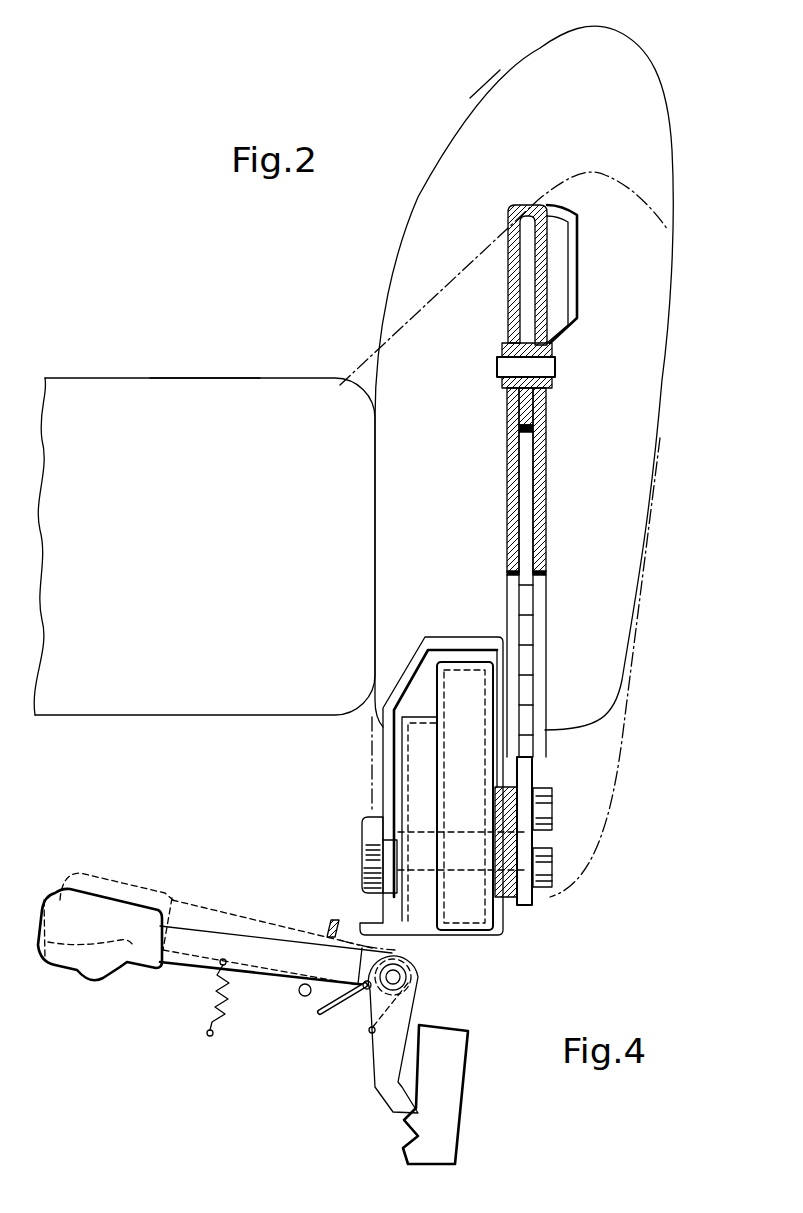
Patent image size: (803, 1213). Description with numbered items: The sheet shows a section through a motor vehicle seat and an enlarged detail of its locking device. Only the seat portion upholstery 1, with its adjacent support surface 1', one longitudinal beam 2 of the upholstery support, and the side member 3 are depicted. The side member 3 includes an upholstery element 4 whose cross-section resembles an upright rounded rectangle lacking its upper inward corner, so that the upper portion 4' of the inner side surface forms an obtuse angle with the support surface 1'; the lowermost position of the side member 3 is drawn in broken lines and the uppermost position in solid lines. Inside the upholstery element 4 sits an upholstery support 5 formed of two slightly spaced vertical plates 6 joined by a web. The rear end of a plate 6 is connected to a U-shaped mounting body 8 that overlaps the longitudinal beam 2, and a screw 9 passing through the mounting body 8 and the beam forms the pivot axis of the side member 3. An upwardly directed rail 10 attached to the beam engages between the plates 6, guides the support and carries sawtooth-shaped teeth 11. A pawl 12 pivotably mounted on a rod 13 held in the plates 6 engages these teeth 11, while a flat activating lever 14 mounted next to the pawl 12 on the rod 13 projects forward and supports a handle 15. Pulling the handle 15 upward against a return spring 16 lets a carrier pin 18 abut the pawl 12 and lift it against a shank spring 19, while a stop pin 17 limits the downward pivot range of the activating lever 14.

In FIG. 2, the seat portion upholstery 1 is at (204, 499).
In FIG. 2, the support surface 1' is at (205, 331).
In FIG. 2, the longitudinal beam 2 is at (420, 776).
In FIG. 2, the side member 3 is at (668, 412).
In FIG. 2, the upholstery element 4 is at (544, 378).
In FIG. 2, the upper portion of the inner side surface 4' is at (468, 90).
In FIG. 2, the upholstery support 5 is at (558, 194).
In FIG. 2, the plates 6 is at (508, 438).
In FIG. 2, the mounting body 8 is at (462, 645).
In FIG. 2, the screw 9 is at (372, 848).
In FIG. 2, the rail 10 is at (527, 770).
In FIG. 4, the rail 10 is at (450, 1113).
In FIG. 2, the teeth 11 is at (527, 630).
In FIG. 4, the teeth 11 is at (407, 1138).
In FIG. 2, the pawl 12 is at (545, 400).
In FIG. 4, the pawl 12 is at (392, 1042).
In FIG. 2, the rod 13 is at (543, 365).
In FIG. 2, the activating lever 14 is at (503, 408).
In FIG. 4, the activating lever 14 is at (198, 937).
In FIG. 4, the handle 15 is at (100, 940).
In FIG. 4, the return spring 16 is at (203, 993).
In FIG. 4, the stop pin 17 is at (299, 990).
In FIG. 4, the carrier pin 18 is at (366, 990).
In FIG. 4, the shank spring 19 is at (343, 1006).